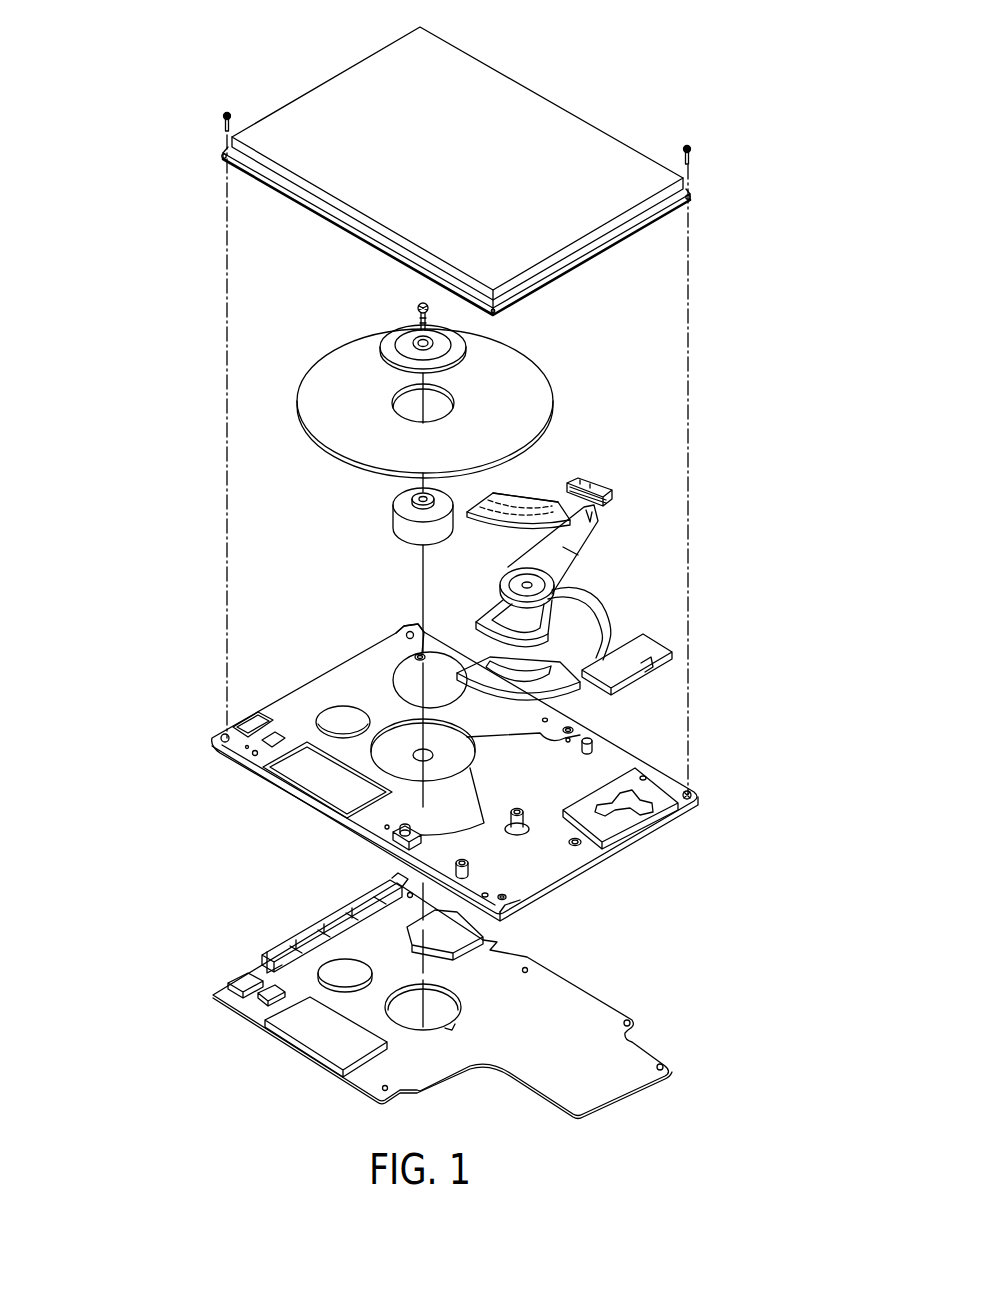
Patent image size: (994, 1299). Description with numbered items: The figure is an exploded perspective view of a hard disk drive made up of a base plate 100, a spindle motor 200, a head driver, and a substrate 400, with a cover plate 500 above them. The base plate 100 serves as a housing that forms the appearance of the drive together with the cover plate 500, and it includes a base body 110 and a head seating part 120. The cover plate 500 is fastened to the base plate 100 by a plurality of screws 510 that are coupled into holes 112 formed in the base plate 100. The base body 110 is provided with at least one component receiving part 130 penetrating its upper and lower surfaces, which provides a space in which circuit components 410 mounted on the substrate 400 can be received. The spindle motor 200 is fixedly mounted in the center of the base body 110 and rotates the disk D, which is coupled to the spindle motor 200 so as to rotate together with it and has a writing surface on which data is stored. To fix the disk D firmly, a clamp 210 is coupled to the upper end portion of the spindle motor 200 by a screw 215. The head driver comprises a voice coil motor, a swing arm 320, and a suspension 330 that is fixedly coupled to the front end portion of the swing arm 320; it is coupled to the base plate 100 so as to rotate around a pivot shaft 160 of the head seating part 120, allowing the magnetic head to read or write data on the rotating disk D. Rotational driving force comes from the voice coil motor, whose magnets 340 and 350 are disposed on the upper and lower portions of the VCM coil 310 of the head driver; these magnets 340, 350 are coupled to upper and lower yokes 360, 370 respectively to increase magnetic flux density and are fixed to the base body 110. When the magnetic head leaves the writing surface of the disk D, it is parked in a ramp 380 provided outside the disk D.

The cover plate 500 is at (333, 85).
The screws 510 is at (692, 148).
The screw 215 is at (418, 305).
The clamp 210 is at (460, 350).
The disk D is at (540, 403).
The spindle motor 200 is at (402, 507).
The magnet 340 is at (503, 505).
The upper yoke 360 is at (503, 498).
The ramp 380 is at (605, 483).
The suspension 330 is at (553, 563).
The swing arm 320 is at (533, 625).
The VCM coil 310 is at (595, 605).
The magnet 350 is at (563, 663).
The lower yoke 370 is at (403, 650).
The base body 110 is at (292, 717).
The component receiving part 130 is at (315, 778).
The base plate 100 is at (452, 775).
The holes 112 is at (700, 793).
The pivot shaft 160 is at (527, 827).
The head seating part 120 is at (523, 867).
The circuit components 410 is at (297, 1025).
The substrate 400 is at (416, 1013).